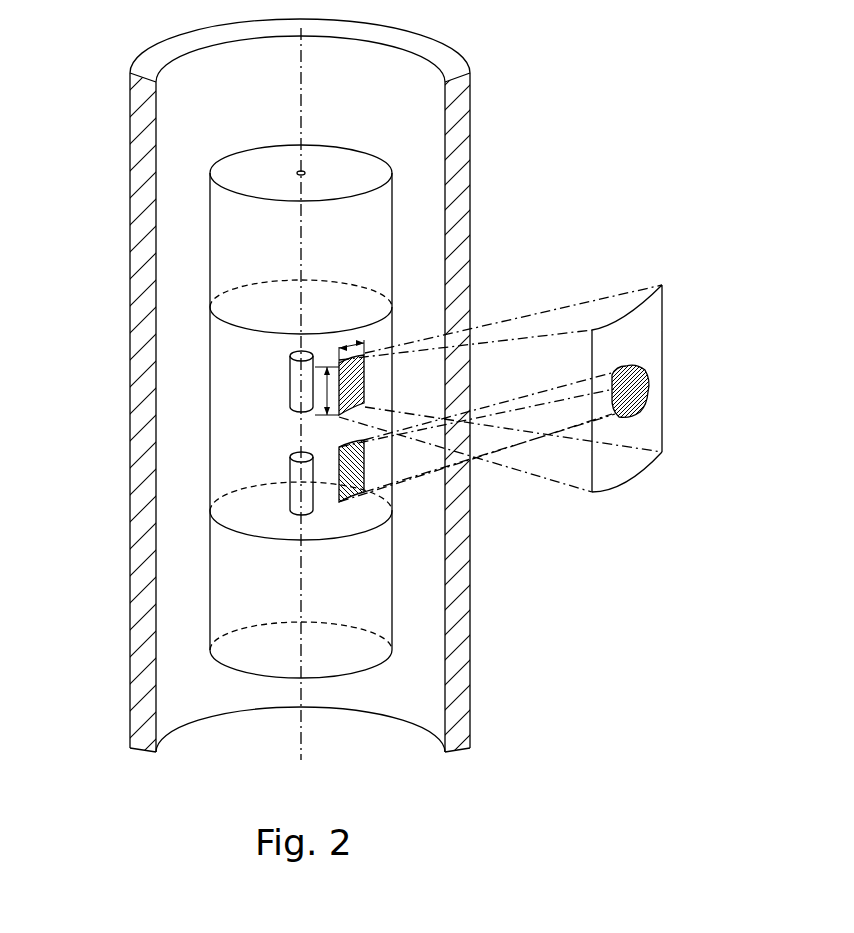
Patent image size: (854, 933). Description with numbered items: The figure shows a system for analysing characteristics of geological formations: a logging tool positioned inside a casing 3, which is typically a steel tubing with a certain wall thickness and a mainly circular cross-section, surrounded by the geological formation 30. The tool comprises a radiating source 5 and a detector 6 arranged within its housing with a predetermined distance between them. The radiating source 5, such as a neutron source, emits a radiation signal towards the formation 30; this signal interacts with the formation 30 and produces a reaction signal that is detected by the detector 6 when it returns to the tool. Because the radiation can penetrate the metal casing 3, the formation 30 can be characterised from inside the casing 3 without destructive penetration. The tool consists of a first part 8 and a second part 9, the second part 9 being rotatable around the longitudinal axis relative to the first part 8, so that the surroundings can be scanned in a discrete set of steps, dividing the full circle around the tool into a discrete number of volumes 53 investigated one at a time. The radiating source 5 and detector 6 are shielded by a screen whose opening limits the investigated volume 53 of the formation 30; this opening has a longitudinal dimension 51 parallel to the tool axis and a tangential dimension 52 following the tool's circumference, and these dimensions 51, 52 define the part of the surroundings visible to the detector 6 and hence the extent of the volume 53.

The casing 3 is at (455, 167).
The geological formation 30 is at (510, 220).
The first part 8 is at (230, 218).
The second part 9 is at (240, 352).
The radiating source 5 is at (290, 392).
The detector 6 is at (290, 478).
The tangential dimension 52 is at (350, 347).
The longitudinal dimension 51 is at (292, 407).
The volume 53 is at (645, 378).